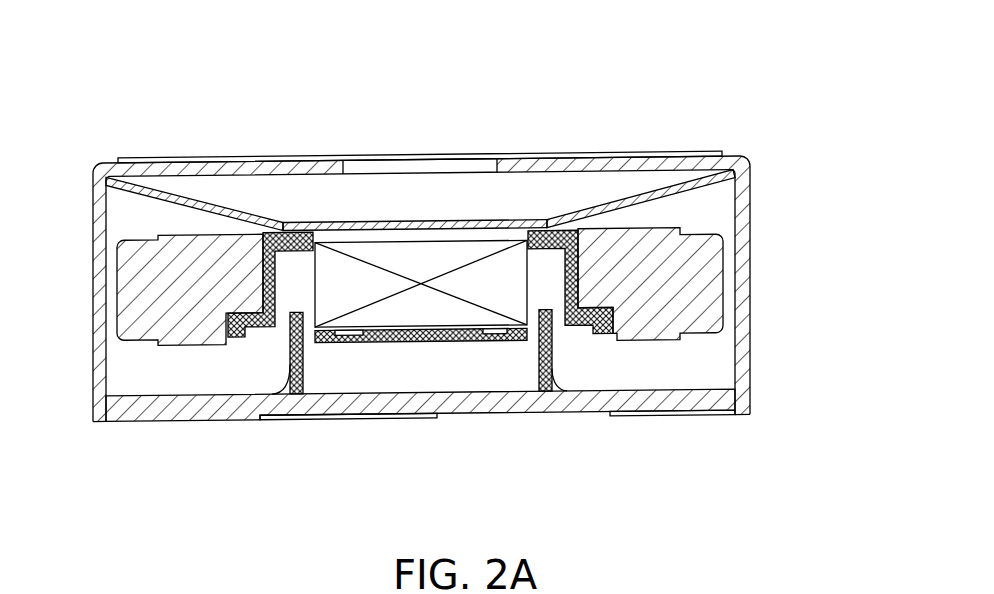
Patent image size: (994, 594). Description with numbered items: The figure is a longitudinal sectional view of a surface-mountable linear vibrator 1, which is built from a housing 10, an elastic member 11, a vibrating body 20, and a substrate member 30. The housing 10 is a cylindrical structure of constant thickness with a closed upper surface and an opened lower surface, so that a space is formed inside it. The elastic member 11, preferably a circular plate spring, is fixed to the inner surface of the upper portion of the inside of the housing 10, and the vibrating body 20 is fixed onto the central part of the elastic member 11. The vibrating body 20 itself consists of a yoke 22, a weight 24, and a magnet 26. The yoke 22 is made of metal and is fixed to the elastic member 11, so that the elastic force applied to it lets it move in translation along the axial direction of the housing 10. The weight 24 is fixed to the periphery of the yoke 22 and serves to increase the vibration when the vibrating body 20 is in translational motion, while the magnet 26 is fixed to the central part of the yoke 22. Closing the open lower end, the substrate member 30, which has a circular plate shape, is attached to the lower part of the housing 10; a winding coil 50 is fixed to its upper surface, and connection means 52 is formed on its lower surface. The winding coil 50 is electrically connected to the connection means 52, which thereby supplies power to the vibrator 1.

The surface-mountable linear vibrator 1 is at (583, 76).
The housing 10 is at (233, 158).
The elastic member 11 is at (170, 190).
The vibrating body 20 is at (616, 275).
The yoke 22 is at (580, 241).
The weight 24 is at (709, 285).
The magnet 26 is at (508, 275).
The substrate member 30 is at (178, 414).
The winding coil 50 is at (539, 366).
The connection means 52 is at (355, 419).